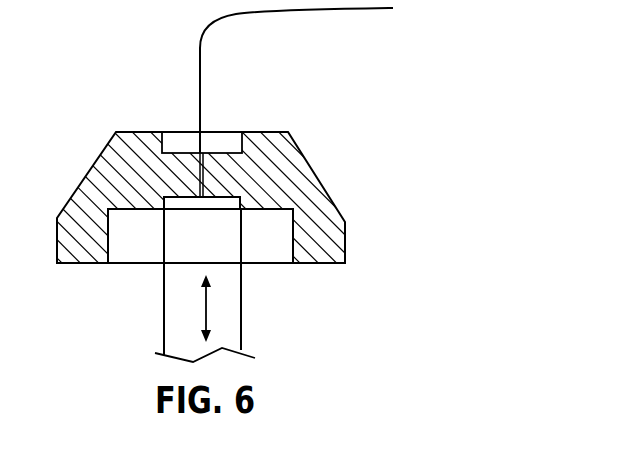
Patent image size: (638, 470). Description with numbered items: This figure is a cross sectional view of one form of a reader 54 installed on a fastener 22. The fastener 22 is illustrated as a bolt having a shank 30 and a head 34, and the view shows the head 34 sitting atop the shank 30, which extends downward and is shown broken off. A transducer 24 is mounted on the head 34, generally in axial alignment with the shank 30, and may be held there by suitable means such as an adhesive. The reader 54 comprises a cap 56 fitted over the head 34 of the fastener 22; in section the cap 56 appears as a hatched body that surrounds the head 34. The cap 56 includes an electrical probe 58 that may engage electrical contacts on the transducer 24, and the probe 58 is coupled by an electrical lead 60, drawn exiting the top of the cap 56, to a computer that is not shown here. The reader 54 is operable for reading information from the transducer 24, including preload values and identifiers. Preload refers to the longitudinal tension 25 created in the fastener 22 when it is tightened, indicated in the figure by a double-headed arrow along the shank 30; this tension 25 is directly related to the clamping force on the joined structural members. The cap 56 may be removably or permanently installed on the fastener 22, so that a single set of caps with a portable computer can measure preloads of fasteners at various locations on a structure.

The reader 54 is at (245, 193).
The cap 56 is at (108, 186).
The electrical probe 58 is at (205, 175).
The electrical lead 60 is at (200, 88).
The transducer 24 is at (227, 203).
The head 34 is at (272, 232).
The fastener 22 is at (233, 243).
The shank 30 is at (222, 295).
The longitudinal tension 25 is at (203, 308).